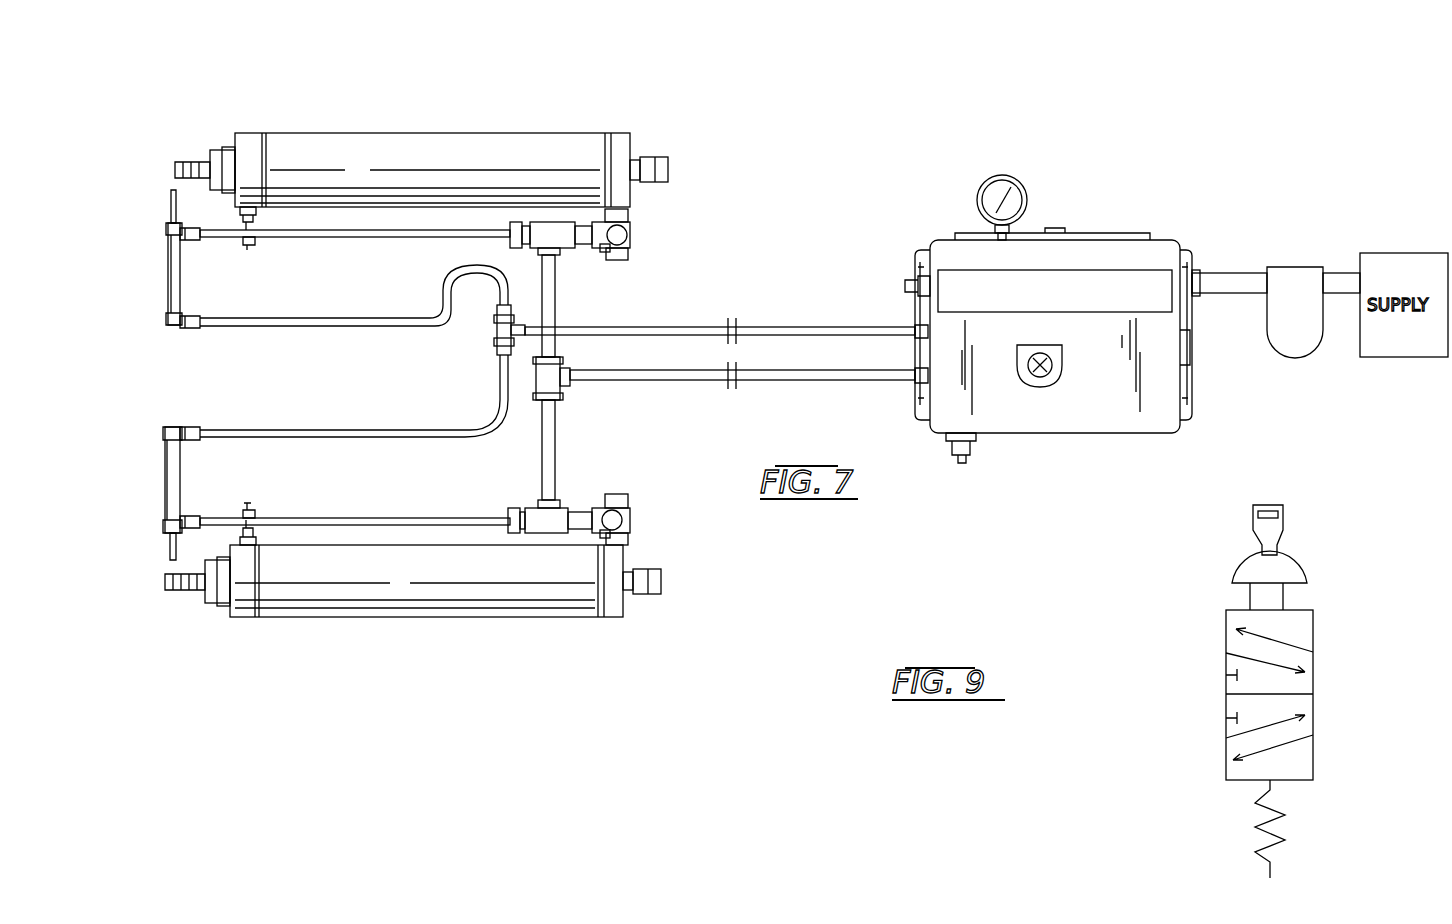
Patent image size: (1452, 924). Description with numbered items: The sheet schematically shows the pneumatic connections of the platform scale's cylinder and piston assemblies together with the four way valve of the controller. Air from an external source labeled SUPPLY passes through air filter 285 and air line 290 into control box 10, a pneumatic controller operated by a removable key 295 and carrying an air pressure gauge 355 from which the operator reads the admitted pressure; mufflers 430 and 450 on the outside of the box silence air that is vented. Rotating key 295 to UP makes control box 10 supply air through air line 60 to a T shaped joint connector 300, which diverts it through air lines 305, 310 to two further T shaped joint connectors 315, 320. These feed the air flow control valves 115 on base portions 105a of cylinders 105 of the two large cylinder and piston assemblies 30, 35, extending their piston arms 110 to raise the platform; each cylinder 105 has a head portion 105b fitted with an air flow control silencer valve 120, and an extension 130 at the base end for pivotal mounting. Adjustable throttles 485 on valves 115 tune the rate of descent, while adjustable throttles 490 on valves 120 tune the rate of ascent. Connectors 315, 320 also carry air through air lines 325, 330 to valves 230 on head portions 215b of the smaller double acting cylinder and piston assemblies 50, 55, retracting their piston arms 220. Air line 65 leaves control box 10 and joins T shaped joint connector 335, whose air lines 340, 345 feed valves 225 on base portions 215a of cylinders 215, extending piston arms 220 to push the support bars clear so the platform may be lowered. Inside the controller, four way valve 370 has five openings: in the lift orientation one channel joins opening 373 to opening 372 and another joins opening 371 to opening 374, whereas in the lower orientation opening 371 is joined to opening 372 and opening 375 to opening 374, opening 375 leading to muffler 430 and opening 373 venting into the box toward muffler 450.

In FIG. 7, the control box 10 is at (1155, 217).
In FIG. 7, the pneumatic cylinder and piston assembly 30 is at (446, 631).
In FIG. 7, the pneumatic cylinder and piston assembly 35 is at (462, 112).
In FIG. 7, the pneumatic cylinder and piston assembly 50 is at (154, 499).
In FIG. 7, the pneumatic cylinder and piston assembly 55 is at (154, 274).
In FIG. 7, the air line 60 is at (790, 380).
In FIG. 7, the air line 65 is at (800, 327).
In FIG. 7, the cylinder 105 is at (520, 150).
In FIG. 7, the base portion 105a is at (618, 148).
In FIG. 7, the head portion 105b is at (245, 150).
In FIG. 7, the piston arm 110 is at (185, 165).
In FIG. 7, the air flow control valve 115 is at (610, 250).
In FIG. 7, the air flow control silencer valve 120 is at (243, 225).
In FIG. 7, the extension 130 is at (668, 170).
In FIG. 7, the cylinder 215 is at (168, 290).
In FIG. 7, the base portion 215a is at (168, 318).
In FIG. 7, the head portion 215b is at (168, 232).
In FIG. 7, the piston arm 220 is at (170, 208).
In FIG. 7, the valve 225 is at (185, 328).
In FIG. 7, the valve 230 is at (190, 240).
In FIG. 7, the air filter 285 is at (1300, 290).
In FIG. 7, the air line 290 is at (1238, 283).
In FIG. 7, the key 295 is at (1040, 372).
In FIG. 9, the key 295 is at (1283, 525).
In FIG. 7, the T shaped joint connector 300 is at (560, 385).
In FIG. 7, the air line 305 is at (555, 450).
In FIG. 7, the air line 310 is at (555, 300).
In FIG. 7, the T shaped joint connector 315 is at (560, 512).
In FIG. 7, the T shaped joint connector 320 is at (568, 252).
In FIG. 7, the air line 325 is at (375, 518).
In FIG. 7, the air line 330 is at (375, 237).
In FIG. 7, the T shaped joint connector 335 is at (497, 335).
In FIG. 7, the air line 340 is at (310, 430).
In FIG. 7, the air line 345 is at (303, 326).
In FIG. 7, the air pressure gauge 355 is at (1020, 195).
In FIG. 9, the four way valve 370 is at (1297, 612).
In FIG. 9, the valve opening connector 371 is at (1226, 654).
In FIG. 9, the valve opening connector 372 is at (1313, 652).
In FIG. 9, the valve opening 373 is at (1226, 628).
In FIG. 9, the valve opening connector 374 is at (1313, 673).
In FIG. 9, the valve opening connector 375 is at (1226, 675).
In FIG. 7, the air muffler 430 is at (905, 282).
In FIG. 7, the air muffler 450 is at (968, 462).
In FIG. 7, the adjustable throttle 485 is at (630, 245).
In FIG. 7, the adjustable throttle 490 is at (250, 245).